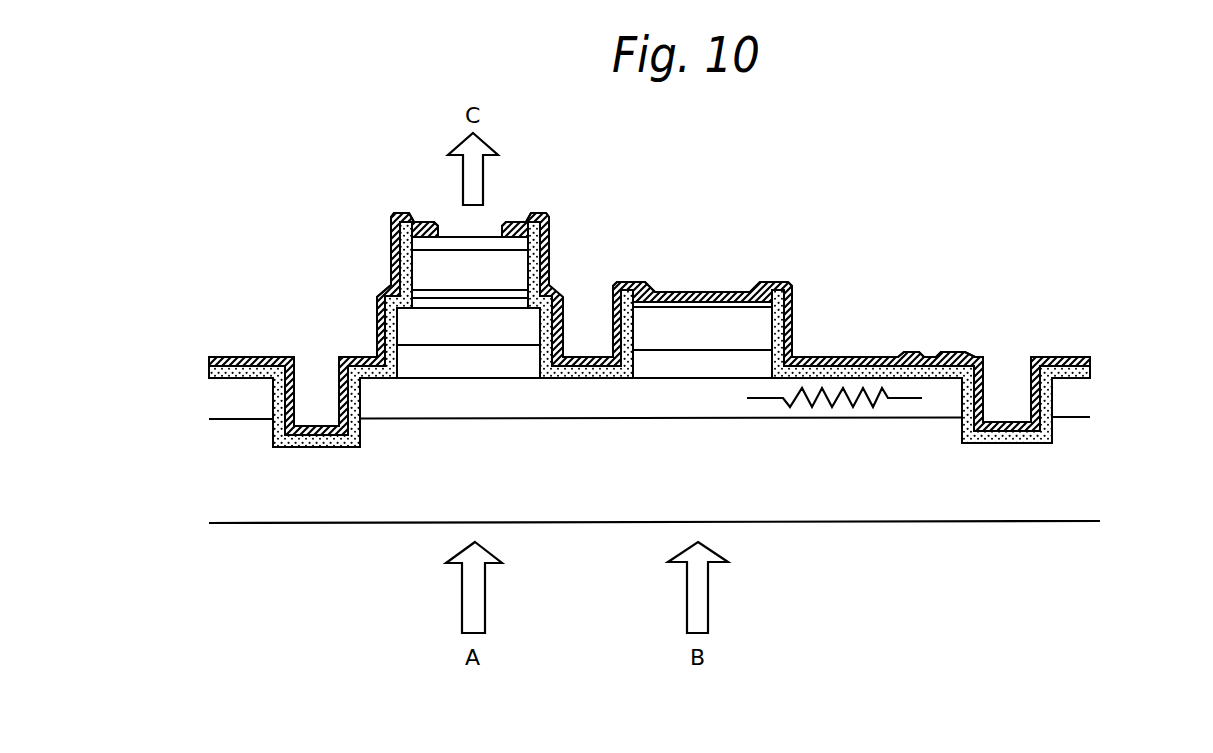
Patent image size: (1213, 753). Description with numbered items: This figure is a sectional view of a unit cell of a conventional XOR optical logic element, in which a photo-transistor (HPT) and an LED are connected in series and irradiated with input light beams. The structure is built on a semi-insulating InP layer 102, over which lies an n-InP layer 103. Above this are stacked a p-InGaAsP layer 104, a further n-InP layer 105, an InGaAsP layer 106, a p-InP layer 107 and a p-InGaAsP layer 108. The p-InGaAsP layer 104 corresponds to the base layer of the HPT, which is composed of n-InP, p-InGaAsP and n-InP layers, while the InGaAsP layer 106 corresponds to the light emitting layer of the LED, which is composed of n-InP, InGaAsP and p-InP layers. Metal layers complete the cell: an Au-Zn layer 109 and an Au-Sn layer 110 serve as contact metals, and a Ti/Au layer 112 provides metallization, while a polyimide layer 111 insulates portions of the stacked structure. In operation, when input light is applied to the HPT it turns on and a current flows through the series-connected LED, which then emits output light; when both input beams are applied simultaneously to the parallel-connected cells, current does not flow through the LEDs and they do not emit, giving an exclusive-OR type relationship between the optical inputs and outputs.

The semi-insulating InP layer 102 is at (1075, 477).
The n-InP layer 103 is at (1078, 398).
The p-InGaAsP layer 104 is at (378, 358).
The n-InP layer 105 is at (382, 320).
The InGaAsP layer 106 is at (390, 288).
The p-InP layer 107 is at (394, 252).
The p-InGaAsP layer 108 is at (391, 214).
The Au-Zn layer 109 is at (530, 215).
The Au-Sn layer 110 is at (940, 356).
The polyimide layer 111 is at (536, 252).
The Ti/Au layer 112 is at (540, 228).